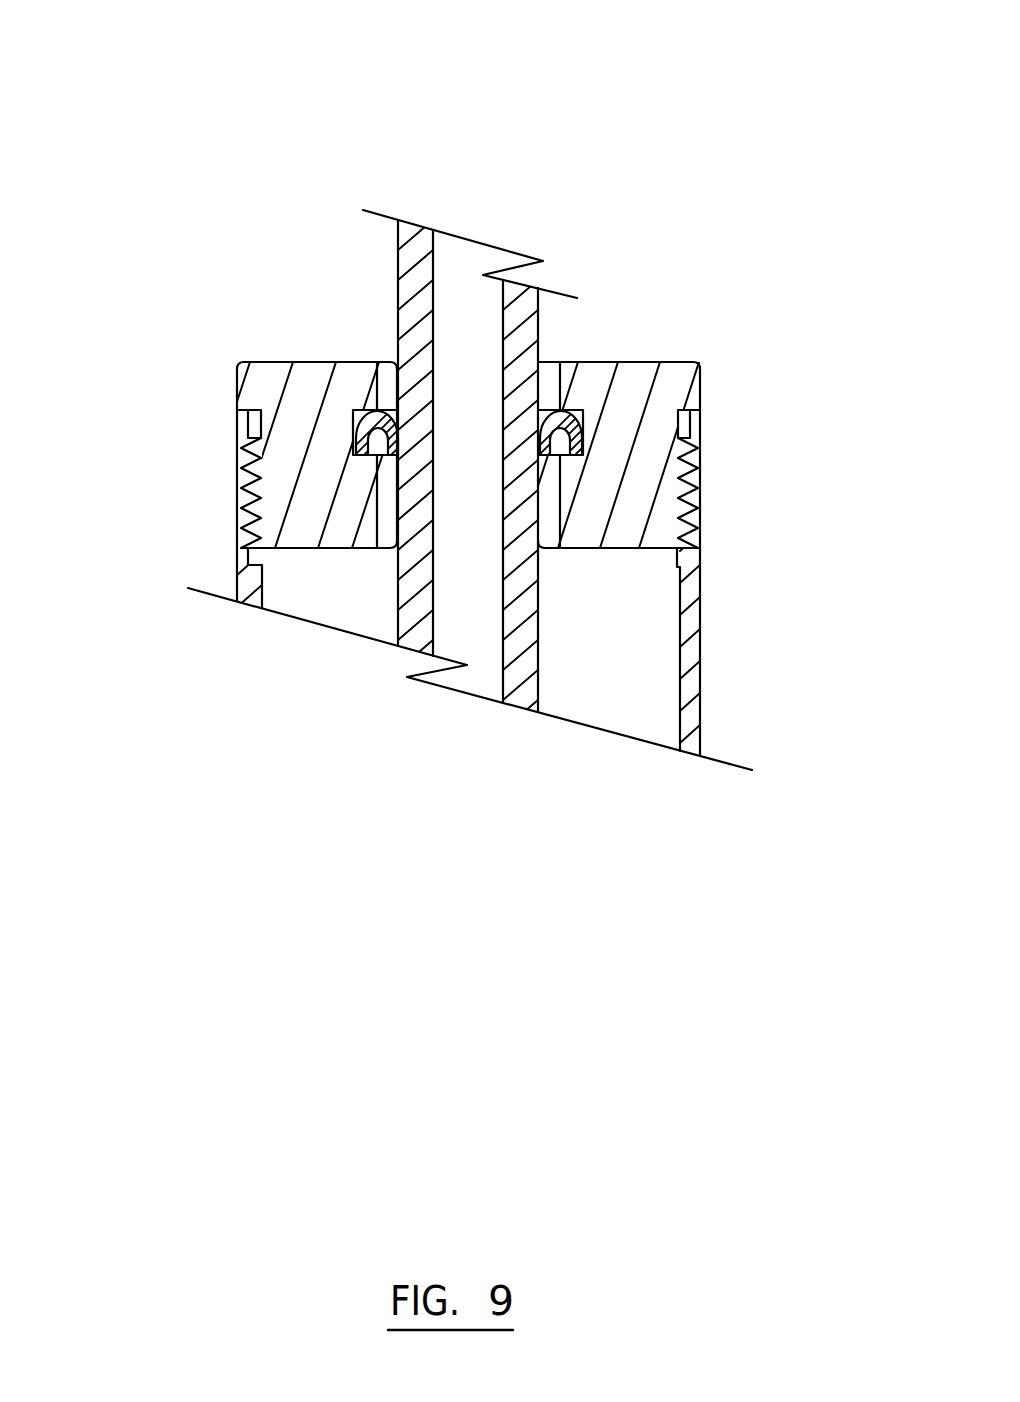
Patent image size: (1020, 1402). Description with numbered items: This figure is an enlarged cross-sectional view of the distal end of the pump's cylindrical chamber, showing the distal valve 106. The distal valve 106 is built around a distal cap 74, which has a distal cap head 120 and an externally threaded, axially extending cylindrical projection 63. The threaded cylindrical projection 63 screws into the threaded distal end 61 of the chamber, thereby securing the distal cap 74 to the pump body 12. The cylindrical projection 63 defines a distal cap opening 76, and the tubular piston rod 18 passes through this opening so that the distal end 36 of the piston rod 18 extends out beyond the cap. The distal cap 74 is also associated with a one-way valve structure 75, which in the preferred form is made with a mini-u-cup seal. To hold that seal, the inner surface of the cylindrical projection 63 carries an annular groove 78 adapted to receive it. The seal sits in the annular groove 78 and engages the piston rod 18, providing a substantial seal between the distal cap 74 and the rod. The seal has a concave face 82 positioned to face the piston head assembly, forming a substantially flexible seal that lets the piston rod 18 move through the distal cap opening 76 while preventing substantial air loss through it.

The distal valve 106 is at (550, 386).
The distal cap head 120 is at (232, 432).
The distal cap opening 76 is at (542, 351).
The distal cap 74 is at (629, 507).
The one-way valve structure 75 is at (560, 457).
The externally threaded axially extending cylindrical projection 63 is at (769, 479).
The distal end of chamber 61 is at (151, 498).
The pump body 12 is at (558, 654).
The annular groove 78 is at (290, 611).
The piston rod 18 is at (359, 553).
The concave face 82 is at (631, 640).
The distal end of piston rod 36 is at (605, 617).